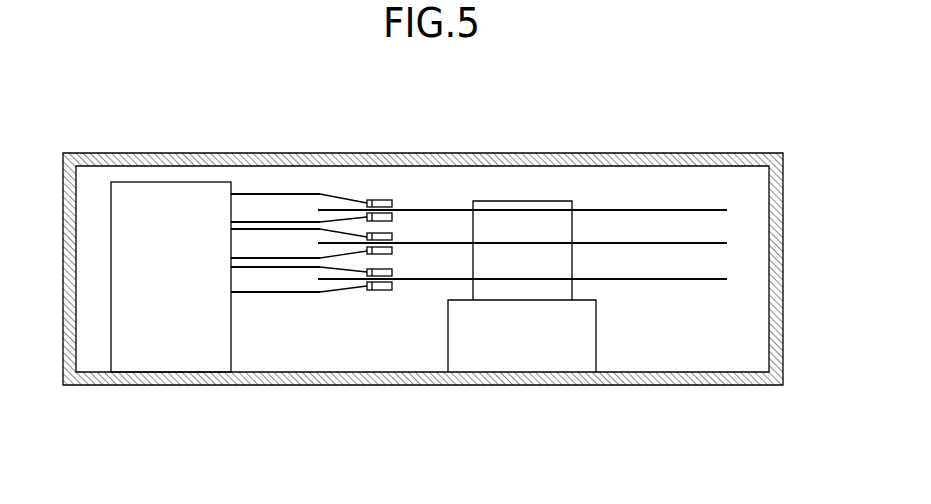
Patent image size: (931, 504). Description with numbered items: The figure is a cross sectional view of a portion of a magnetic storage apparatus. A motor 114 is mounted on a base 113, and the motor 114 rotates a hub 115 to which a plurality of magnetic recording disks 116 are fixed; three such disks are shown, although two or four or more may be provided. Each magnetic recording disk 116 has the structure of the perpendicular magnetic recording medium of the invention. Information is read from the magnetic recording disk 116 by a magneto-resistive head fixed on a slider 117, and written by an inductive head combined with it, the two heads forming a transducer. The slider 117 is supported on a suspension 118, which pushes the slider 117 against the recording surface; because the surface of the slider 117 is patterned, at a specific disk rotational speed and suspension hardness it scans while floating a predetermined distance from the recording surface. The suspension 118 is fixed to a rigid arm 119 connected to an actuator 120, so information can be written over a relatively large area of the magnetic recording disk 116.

The base 113 is at (734, 389).
The motor 114 is at (544, 359).
The hub 115 is at (535, 194).
The magnetic recording disk 116 is at (657, 203).
The slider 117 is at (391, 192).
The suspension 118 is at (356, 189).
The rigid arm 119 is at (288, 189).
The actuator 120 is at (176, 365).